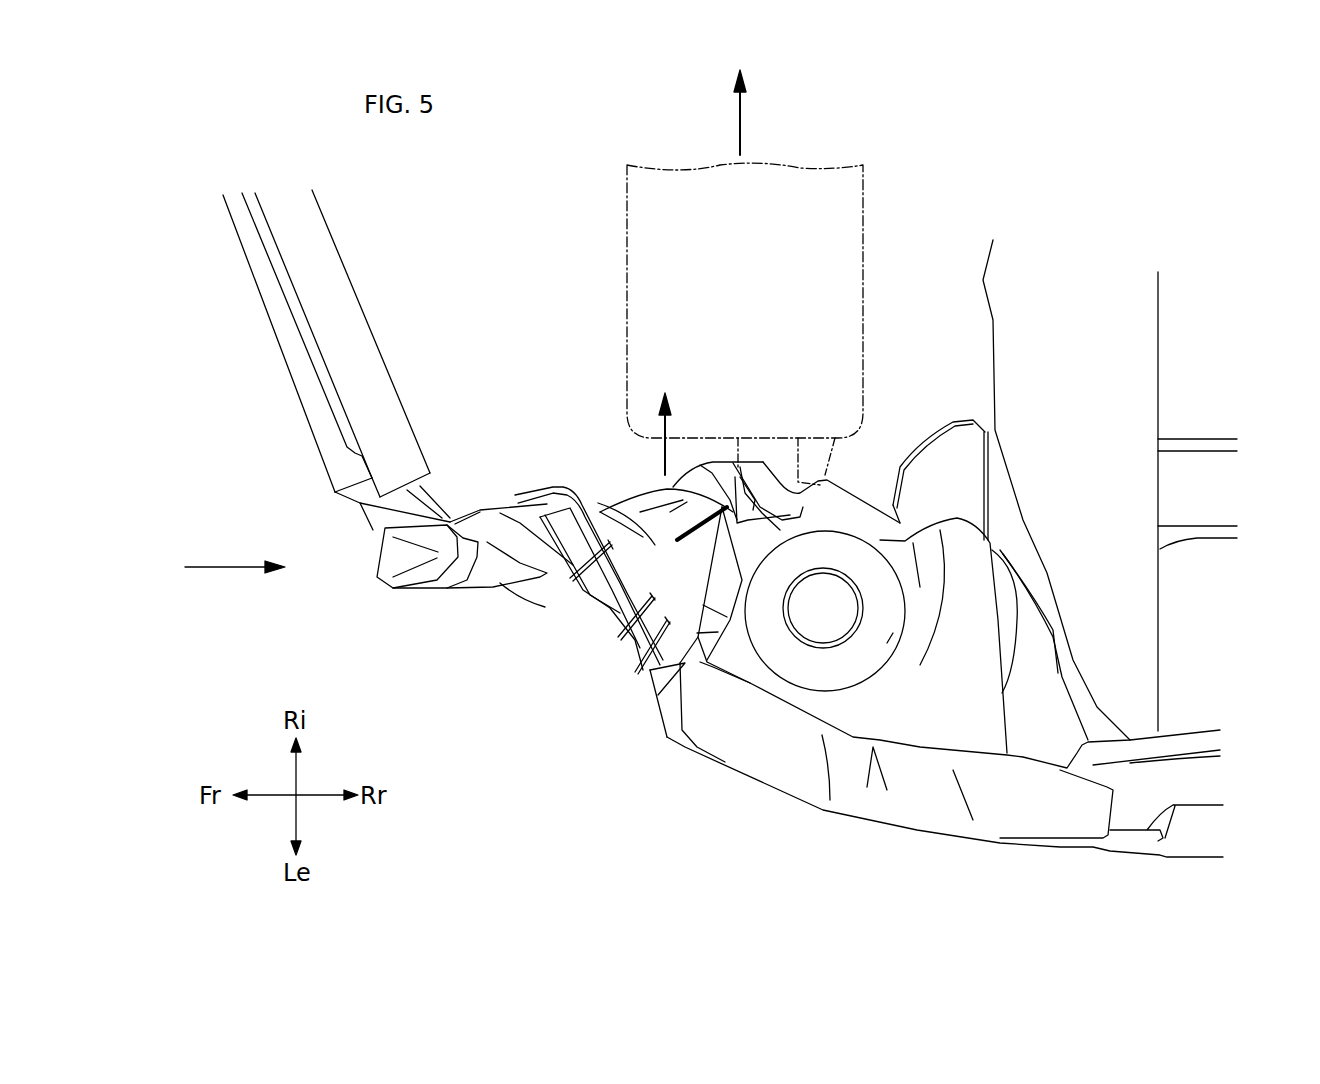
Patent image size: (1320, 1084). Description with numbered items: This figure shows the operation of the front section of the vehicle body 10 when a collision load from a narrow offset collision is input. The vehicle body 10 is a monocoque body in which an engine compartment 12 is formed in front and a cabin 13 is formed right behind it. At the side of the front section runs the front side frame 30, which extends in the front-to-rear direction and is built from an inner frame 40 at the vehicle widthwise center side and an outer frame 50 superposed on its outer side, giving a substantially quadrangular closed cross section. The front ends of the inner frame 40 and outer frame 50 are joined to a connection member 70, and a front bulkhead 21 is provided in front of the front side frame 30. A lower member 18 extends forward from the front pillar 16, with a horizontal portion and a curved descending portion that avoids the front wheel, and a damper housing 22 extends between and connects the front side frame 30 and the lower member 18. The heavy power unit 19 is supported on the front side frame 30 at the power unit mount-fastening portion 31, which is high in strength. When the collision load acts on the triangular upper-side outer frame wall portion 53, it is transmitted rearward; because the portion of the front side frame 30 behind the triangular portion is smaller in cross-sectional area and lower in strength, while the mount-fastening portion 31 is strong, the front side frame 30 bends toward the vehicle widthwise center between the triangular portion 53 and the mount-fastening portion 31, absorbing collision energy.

The vehicle body 10 is at (190, 192).
The front bulkhead 21 is at (255, 285).
The connection member 70 is at (528, 483).
The front side frame 30 is at (627, 487).
The power unit mount-fastening portion 31 is at (732, 473).
The power unit 19 is at (868, 240).
The engine compartment 12 is at (937, 496).
The lower member 18 is at (1160, 292).
The cabin 13 is at (1197, 438).
The inner frame 40 is at (570, 580).
The outer frame 50 is at (627, 618).
The upper-side outer frame wall portion 53 is at (648, 670).
The damper housing 22 is at (815, 704).
The front pillar 16 is at (1207, 805).